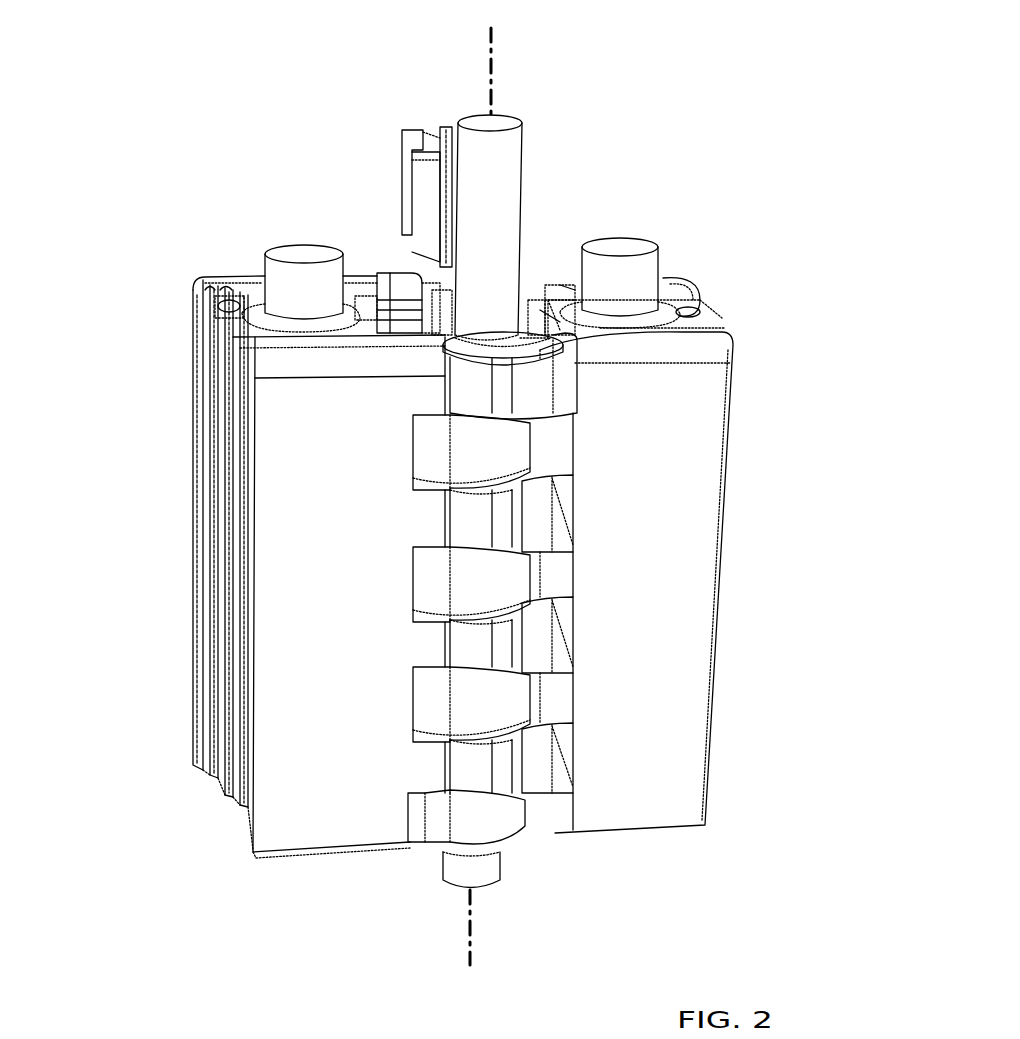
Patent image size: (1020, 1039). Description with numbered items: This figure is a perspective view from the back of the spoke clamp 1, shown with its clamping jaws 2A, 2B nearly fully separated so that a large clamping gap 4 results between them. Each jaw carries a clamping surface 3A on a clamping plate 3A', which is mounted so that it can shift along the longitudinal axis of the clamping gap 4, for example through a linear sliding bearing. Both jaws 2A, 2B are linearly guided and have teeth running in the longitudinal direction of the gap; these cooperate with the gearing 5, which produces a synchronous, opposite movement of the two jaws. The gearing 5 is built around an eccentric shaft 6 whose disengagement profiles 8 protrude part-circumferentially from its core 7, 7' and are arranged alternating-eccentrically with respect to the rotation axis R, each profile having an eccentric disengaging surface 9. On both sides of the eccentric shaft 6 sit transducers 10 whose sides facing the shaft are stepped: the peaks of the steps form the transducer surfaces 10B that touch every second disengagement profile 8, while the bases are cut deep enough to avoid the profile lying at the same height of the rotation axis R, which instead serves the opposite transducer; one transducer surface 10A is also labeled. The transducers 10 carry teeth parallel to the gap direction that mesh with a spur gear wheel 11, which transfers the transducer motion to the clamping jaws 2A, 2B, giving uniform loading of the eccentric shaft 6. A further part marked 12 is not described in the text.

The clamp 1 is at (237, 226).
The clamping jaw 2A is at (193, 323).
The clamping jaw 2B is at (553, 272).
The clamping surface 3A is at (382, 265).
The clamping plate 3A' is at (368, 250).
The clamping gap 4 is at (447, 300).
The gearing 5 is at (226, 304).
The eccentric shaft 6 is at (518, 133).
The core 7 is at (624, 254).
The electrical connector 7' is at (534, 319).
The disengagement profiles 8 is at (500, 812).
The eccentric disengaging surface 9 is at (553, 327).
The transducer 10 is at (462, 593).
The transducer surface 10A is at (448, 520).
The transducer surfaces 10B is at (530, 445).
The spur gear wheel 11 is at (228, 366).
The locking bracket 12 is at (429, 118).
The rotation axis R is at (495, 31).